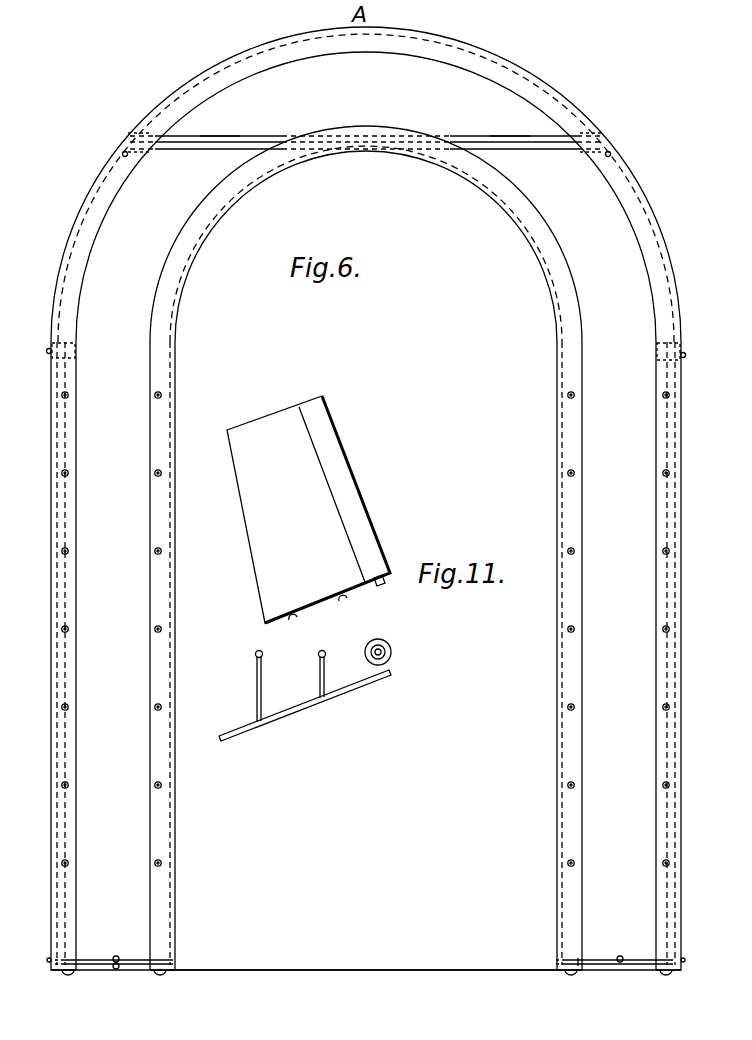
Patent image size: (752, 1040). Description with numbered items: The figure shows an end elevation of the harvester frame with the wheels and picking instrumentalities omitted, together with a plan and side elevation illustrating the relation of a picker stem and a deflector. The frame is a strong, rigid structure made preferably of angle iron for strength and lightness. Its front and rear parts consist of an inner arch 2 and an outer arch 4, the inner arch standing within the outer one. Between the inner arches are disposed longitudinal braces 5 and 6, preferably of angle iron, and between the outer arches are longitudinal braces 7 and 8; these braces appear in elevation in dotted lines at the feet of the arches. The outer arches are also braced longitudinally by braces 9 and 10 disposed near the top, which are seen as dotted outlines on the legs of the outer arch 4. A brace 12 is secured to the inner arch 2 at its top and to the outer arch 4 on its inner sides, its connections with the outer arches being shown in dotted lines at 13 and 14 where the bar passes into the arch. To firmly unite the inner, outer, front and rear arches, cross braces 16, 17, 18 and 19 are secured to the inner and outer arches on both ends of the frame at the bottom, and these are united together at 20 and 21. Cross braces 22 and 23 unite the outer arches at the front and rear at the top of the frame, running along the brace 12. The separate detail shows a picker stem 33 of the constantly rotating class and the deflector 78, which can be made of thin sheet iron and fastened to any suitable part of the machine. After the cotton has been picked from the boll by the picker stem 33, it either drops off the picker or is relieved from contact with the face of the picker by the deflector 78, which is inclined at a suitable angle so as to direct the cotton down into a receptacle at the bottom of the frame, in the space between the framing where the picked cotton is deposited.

In FIG. 6, the inner arch 2 is at (226, 213).
In FIG. 6, the outer arch 4 is at (363, 50).
In FIG. 6, the longitudinal brace 5 is at (162, 974).
In FIG. 6, the longitudinal brace 6 is at (571, 974).
In FIG. 6, the longitudinal brace 7 is at (68, 974).
In FIG. 6, the longitudinal brace 8 is at (668, 974).
In FIG. 6, the brace 9 is at (68, 350).
In FIG. 6, the brace 10 is at (662, 353).
In FIG. 6, the brace 12 is at (222, 150).
In FIG. 6, the connection 13 is at (610, 153).
In FIG. 6, the connection 14 is at (123, 153).
In FIG. 6, the cross brace 16 is at (98, 955).
In FIG. 6, the cross brace 17 is at (118, 968).
In FIG. 6, the cross brace 18 is at (637, 966).
In FIG. 6, the cross brace 19 is at (584, 967).
In FIG. 6, the union point of cross braces 20 is at (117, 958).
In FIG. 6, the union point of cross braces 21 is at (620, 957).
In FIG. 6, the cross brace 22 is at (503, 138).
In FIG. 6, the cross brace 23 is at (213, 137).
In FIG. 11, the picker stem 33 is at (358, 494).
In FIG. 11, the deflector 78 is at (347, 714).